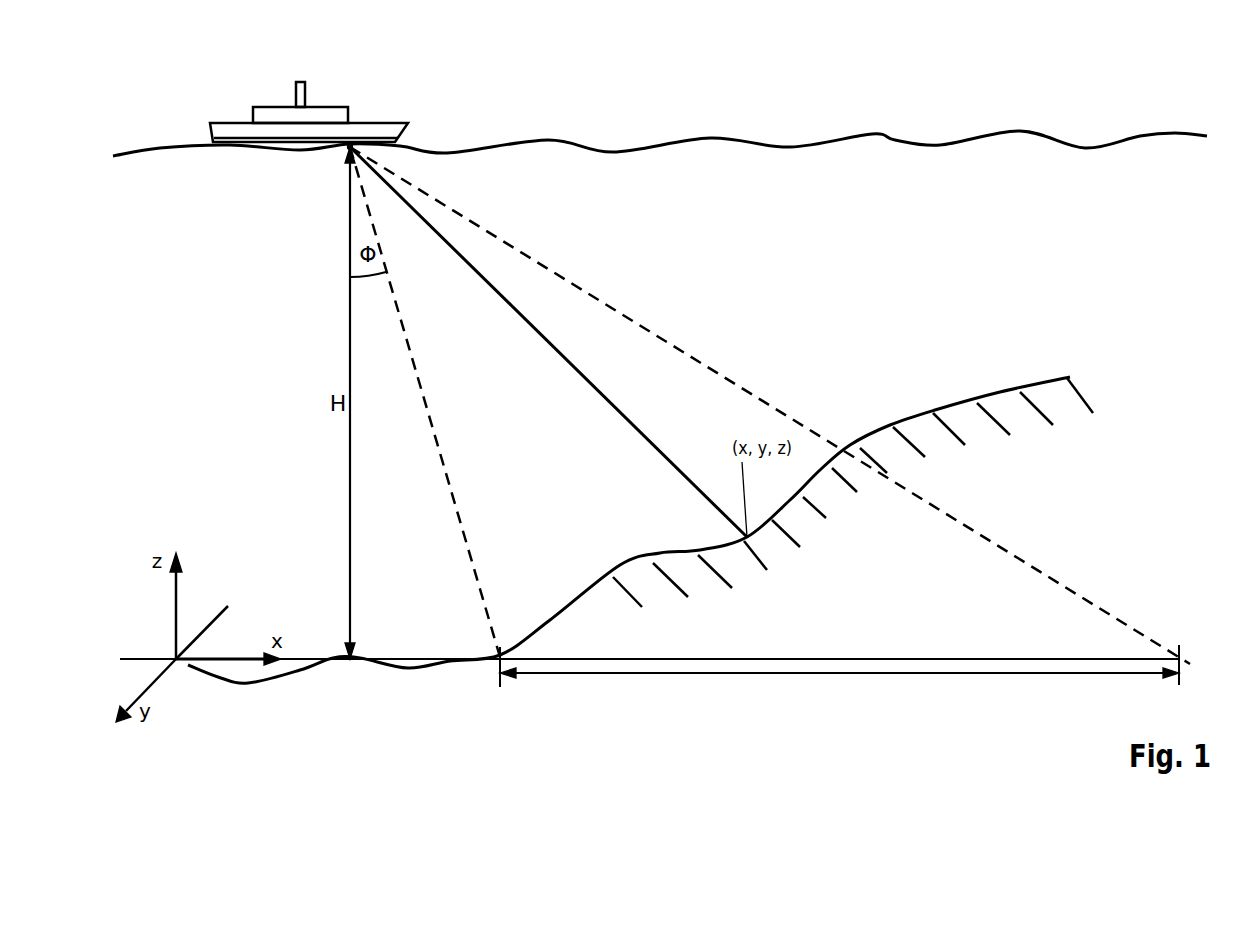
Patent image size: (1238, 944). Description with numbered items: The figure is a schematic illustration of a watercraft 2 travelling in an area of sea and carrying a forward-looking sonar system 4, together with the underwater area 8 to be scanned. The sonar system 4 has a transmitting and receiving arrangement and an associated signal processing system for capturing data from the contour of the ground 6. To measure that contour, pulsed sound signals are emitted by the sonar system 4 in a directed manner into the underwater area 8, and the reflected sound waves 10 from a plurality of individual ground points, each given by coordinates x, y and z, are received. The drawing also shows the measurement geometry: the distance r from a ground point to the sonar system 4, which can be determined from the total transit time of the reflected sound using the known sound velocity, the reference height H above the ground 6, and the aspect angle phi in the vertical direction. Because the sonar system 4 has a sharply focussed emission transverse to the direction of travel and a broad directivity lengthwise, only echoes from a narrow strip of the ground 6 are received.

The watercraft 2 is at (370, 130).
The forward-looking sonar system 4 is at (346, 151).
The ground 6 is at (960, 407).
The underwater area 8 is at (825, 673).
The reflected sound waves 10 is at (597, 392).